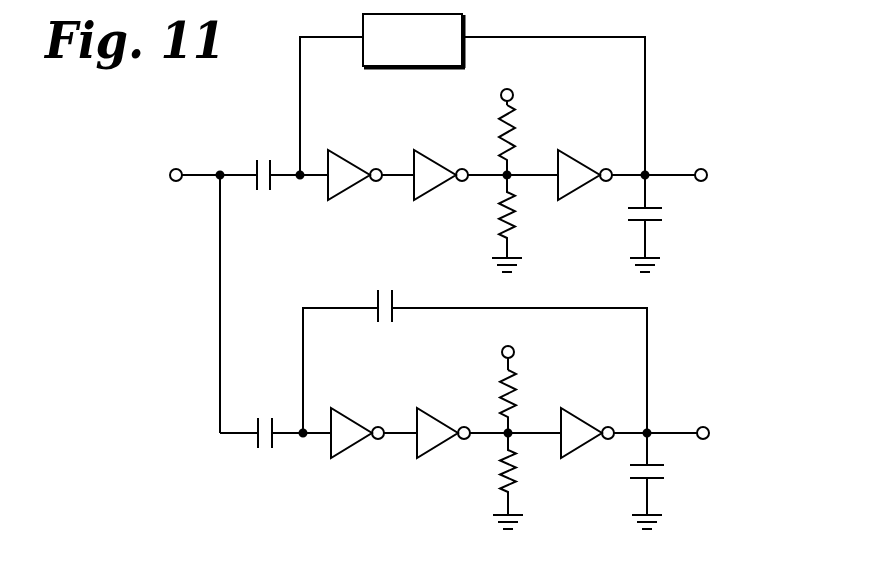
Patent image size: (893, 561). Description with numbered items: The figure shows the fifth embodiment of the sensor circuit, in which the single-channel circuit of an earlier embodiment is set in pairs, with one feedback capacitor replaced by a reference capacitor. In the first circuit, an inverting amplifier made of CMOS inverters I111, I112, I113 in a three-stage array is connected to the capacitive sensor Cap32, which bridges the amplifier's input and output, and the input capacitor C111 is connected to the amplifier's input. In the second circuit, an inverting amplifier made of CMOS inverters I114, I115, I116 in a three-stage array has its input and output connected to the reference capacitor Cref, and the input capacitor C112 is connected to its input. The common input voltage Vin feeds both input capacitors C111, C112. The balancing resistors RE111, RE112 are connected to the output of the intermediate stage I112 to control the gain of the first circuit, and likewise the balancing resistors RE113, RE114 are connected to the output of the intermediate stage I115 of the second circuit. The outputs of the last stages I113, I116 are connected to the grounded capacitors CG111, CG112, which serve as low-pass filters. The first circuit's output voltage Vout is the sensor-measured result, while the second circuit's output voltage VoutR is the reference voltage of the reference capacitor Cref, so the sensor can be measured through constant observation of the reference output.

The common input voltage Vin is at (191, 298).
The input capacitor C111 is at (283, 191).
The capacitive sensor Cap32 is at (471, 96).
The CMOS inverter I111 is at (371, 163).
The CMOS inverter I112 is at (486, 163).
The CMOS inverter I113 is at (626, 188).
The balancing resistor RE111 is at (548, 140).
The balancing resistor RE112 is at (472, 223).
The output voltage Vout is at (733, 174).
The grounded capacitor CG111 is at (688, 223).
The input capacitor C112 is at (275, 449).
The reference capacitor Cref is at (474, 349).
The CMOS inverter I114 is at (373, 420).
The CMOS inverter I115 is at (489, 420).
The CMOS inverter I116 is at (629, 446).
The balancing resistor RE113 is at (550, 399).
The balancing resistor RE114 is at (472, 481).
The output voltage VoutR is at (745, 432).
The grounded capacitor CG112 is at (691, 481).